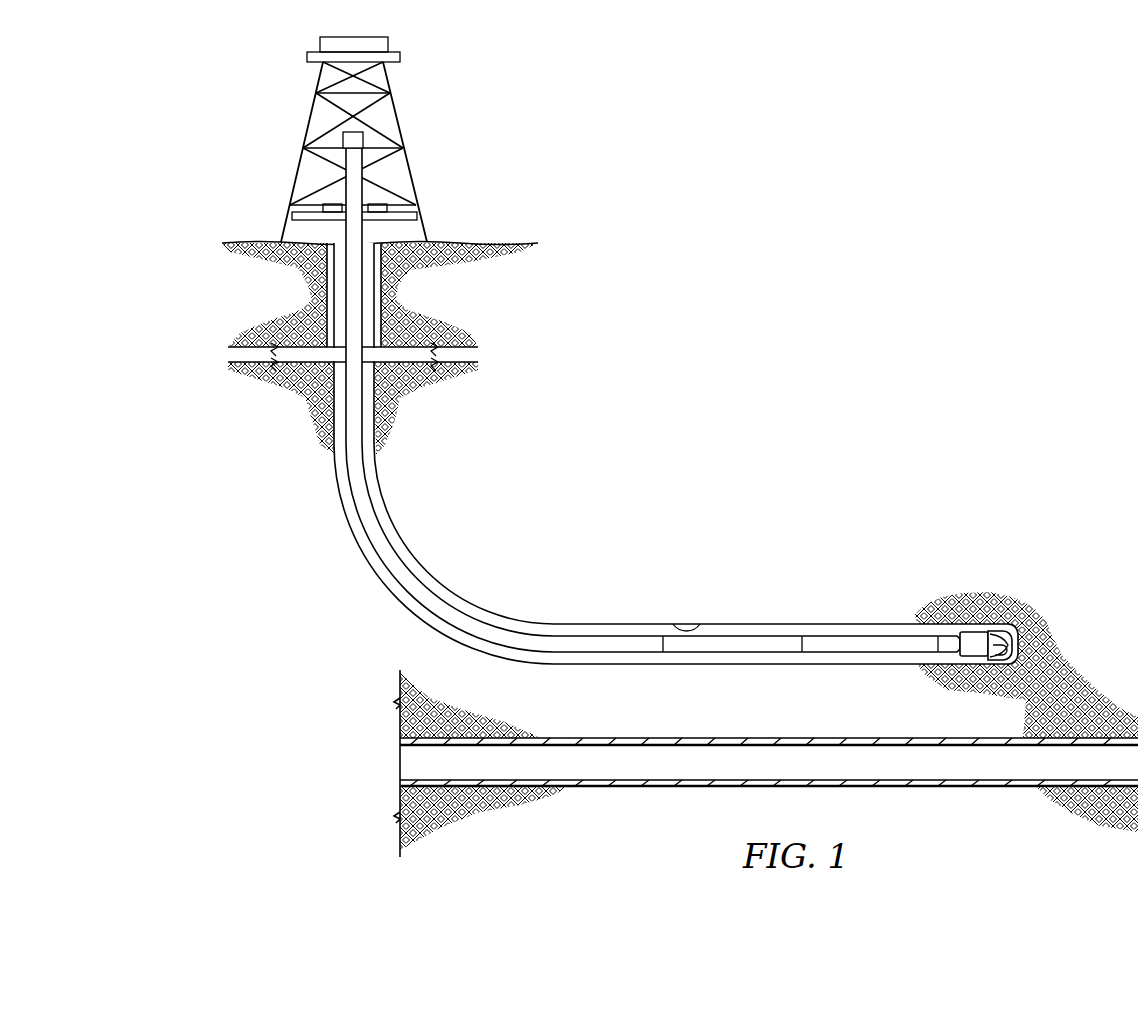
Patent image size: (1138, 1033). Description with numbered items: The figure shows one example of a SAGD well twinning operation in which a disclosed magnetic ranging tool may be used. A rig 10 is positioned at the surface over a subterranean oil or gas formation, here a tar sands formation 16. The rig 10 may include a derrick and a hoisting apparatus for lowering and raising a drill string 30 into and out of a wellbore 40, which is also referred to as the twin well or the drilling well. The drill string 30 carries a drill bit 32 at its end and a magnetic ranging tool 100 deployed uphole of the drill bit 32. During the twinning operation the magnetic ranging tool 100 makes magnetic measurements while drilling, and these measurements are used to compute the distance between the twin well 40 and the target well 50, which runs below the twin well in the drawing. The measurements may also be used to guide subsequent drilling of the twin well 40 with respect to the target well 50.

The rig 10 is at (251, 129).
The tar sands formation 16 is at (1113, 660).
The drill string 30 is at (635, 653).
The drill bit 32 is at (975, 640).
The wellbore 40 is at (687, 624).
The target well 50 is at (655, 786).
The magnetic ranging tool 100 is at (751, 637).